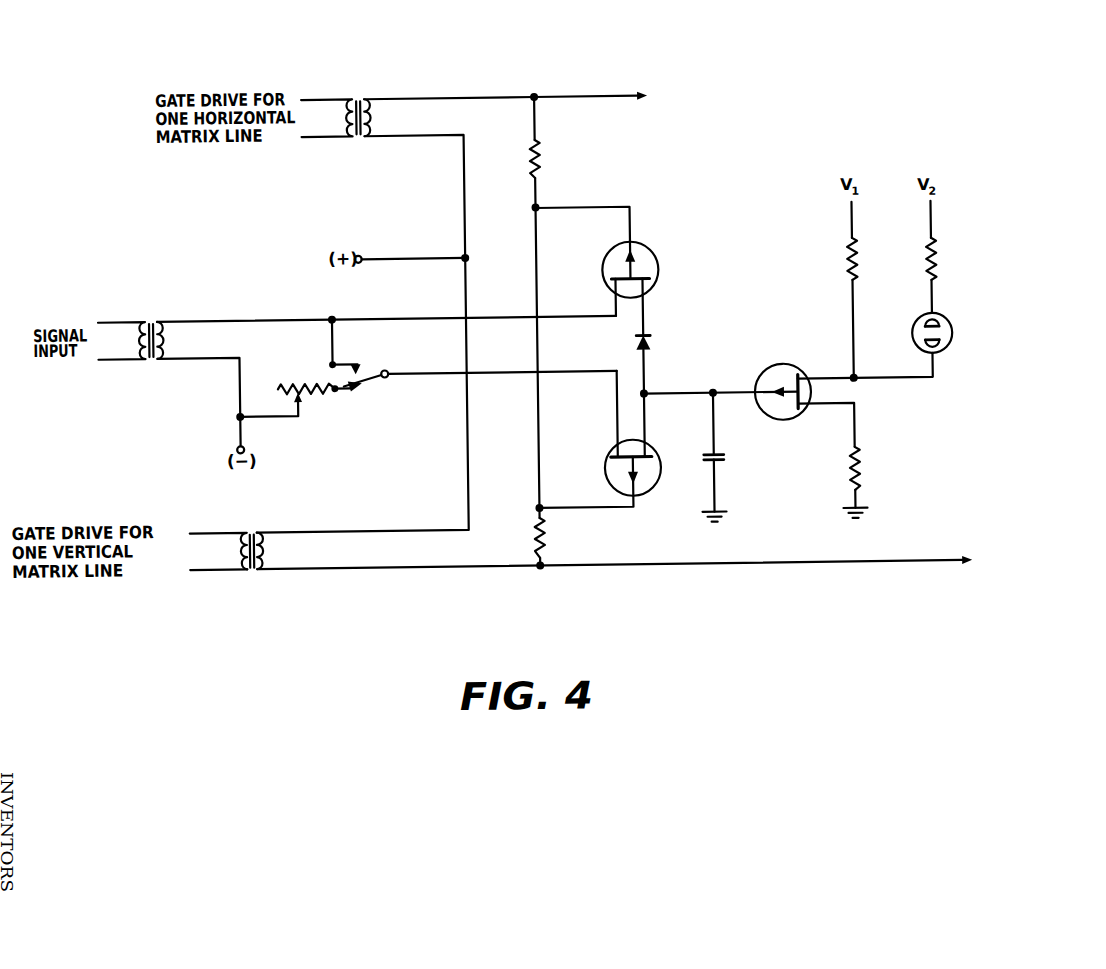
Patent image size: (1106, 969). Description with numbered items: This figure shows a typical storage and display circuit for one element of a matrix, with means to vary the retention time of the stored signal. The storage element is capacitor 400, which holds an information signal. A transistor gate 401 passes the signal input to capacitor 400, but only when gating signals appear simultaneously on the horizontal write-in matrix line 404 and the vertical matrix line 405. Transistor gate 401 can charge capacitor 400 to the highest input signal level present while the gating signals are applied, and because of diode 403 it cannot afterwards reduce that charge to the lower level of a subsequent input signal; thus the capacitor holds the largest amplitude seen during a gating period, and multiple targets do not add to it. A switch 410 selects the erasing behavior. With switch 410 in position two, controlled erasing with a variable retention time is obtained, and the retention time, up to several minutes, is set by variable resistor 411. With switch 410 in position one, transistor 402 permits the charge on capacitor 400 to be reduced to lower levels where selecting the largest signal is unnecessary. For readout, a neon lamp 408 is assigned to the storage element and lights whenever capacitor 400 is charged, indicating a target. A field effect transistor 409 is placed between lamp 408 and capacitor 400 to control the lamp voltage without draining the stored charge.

The capacitor 400 is at (716, 464).
The transistor gate 401 is at (647, 249).
The transistor 402 is at (603, 458).
The diode 403 is at (651, 347).
The horizontal write-in matrix line 404 is at (563, 97).
The vertical matrix line 405 is at (637, 566).
The neon lamp 408 is at (943, 324).
The field effect transistor 409 is at (769, 369).
The switch 410 is at (374, 377).
The variable resistor 411 is at (284, 381).